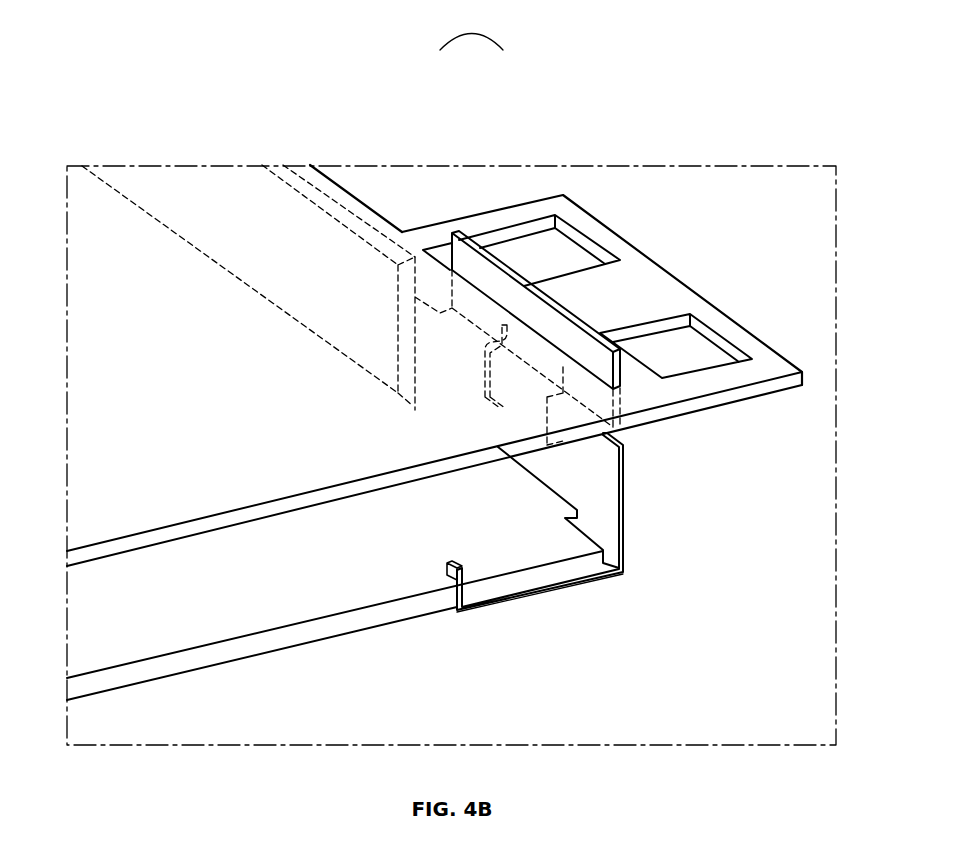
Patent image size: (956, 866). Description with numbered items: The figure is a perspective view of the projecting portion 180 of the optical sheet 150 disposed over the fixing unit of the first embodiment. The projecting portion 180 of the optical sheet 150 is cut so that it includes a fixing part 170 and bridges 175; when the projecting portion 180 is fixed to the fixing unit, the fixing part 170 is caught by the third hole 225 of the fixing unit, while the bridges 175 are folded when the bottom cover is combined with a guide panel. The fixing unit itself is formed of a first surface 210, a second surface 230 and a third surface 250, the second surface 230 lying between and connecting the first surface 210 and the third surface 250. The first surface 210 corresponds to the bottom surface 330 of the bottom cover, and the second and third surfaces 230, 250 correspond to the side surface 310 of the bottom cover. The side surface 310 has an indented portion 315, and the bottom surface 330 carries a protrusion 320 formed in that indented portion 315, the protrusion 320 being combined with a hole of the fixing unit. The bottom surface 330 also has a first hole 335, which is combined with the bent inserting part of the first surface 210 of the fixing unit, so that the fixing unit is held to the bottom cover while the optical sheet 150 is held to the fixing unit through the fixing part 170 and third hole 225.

The optical sheet 150 is at (186, 530).
The bridges 175 is at (487, 218).
The projecting portion 180 is at (471, 31).
The fixing part 170 is at (583, 292).
The third surface 250 is at (620, 362).
The side surface 310 is at (360, 217).
The indented portion 315 is at (397, 330).
The third hole 225 is at (513, 378).
The second surface 230 is at (598, 478).
The protrusion 320 is at (625, 505).
The first surface 210 is at (548, 590).
The bottom surface 330 is at (352, 626).
The first hole 335 is at (443, 570).